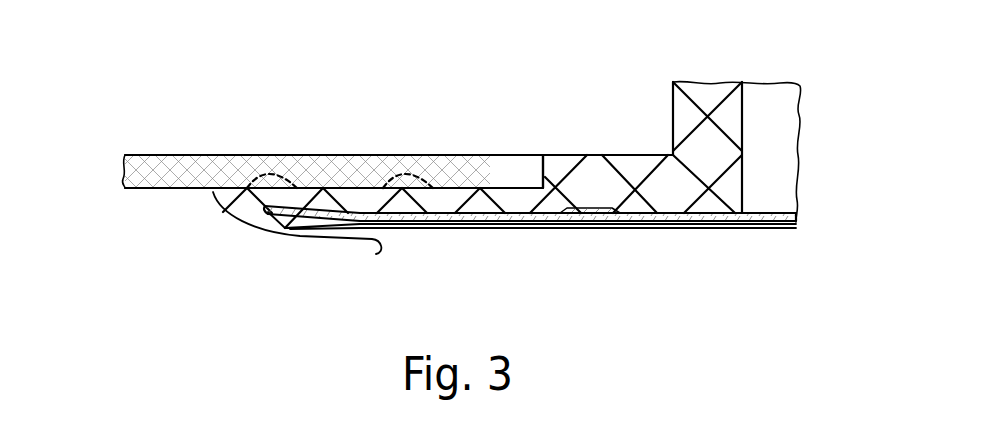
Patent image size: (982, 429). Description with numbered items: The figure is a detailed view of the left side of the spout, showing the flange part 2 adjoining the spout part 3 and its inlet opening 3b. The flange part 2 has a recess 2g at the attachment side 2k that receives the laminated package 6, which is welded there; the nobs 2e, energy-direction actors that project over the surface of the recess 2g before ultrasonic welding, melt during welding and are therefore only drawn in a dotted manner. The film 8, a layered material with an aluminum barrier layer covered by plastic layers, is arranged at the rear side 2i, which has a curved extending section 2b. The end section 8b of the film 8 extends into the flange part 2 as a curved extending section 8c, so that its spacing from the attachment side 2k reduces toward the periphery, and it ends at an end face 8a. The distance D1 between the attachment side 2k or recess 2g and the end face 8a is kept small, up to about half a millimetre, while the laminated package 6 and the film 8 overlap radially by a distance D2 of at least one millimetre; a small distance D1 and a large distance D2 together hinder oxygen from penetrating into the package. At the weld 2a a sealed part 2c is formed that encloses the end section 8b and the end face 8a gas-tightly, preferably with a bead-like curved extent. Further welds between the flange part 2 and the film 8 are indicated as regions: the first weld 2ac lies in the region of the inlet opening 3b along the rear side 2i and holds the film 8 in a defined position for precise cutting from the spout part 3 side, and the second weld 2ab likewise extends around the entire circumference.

The flange part 2 is at (597, 192).
The weld 2a is at (273, 292).
The curved extending section 2b is at (360, 145).
The sealed part 2c is at (378, 256).
The nobs 2e is at (246, 158).
The recess 2g is at (500, 172).
The rear side 2i is at (518, 240).
The attachment side 2k is at (532, 172).
The second weld 2ab is at (432, 318).
The first weld 2ac is at (717, 325).
The spout part 3 is at (690, 107).
The inlet opening 3b is at (770, 200).
The laminated package 6 is at (142, 166).
The film 8 is at (714, 218).
The end face 8a is at (256, 207).
The end section 8b is at (266, 221).
The curved extending section 8c is at (373, 247).
The distance D1 is at (112, 173).
The distance D2 is at (490, 155).